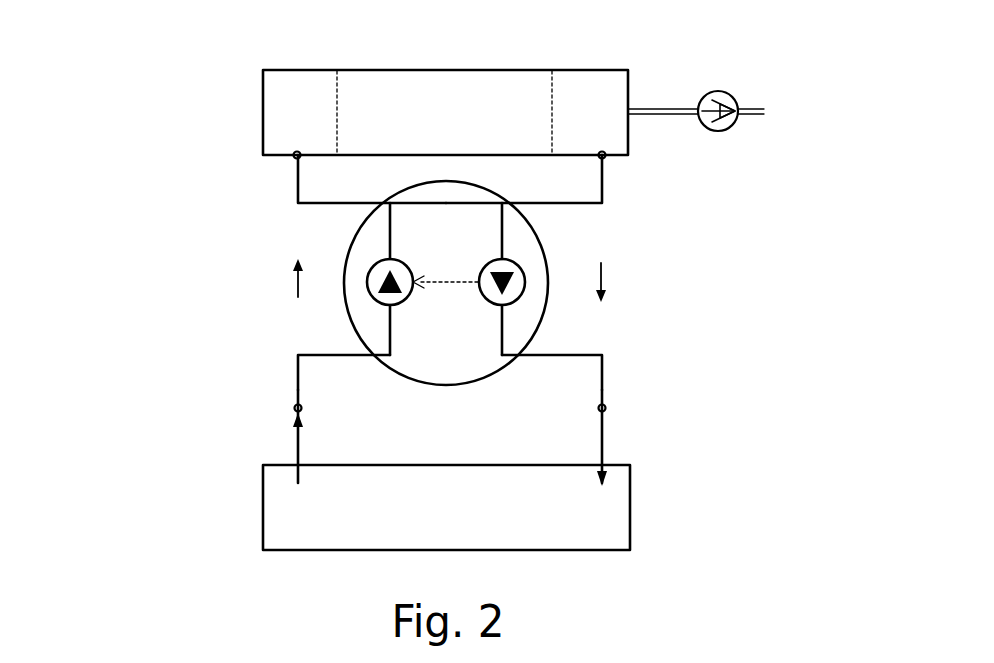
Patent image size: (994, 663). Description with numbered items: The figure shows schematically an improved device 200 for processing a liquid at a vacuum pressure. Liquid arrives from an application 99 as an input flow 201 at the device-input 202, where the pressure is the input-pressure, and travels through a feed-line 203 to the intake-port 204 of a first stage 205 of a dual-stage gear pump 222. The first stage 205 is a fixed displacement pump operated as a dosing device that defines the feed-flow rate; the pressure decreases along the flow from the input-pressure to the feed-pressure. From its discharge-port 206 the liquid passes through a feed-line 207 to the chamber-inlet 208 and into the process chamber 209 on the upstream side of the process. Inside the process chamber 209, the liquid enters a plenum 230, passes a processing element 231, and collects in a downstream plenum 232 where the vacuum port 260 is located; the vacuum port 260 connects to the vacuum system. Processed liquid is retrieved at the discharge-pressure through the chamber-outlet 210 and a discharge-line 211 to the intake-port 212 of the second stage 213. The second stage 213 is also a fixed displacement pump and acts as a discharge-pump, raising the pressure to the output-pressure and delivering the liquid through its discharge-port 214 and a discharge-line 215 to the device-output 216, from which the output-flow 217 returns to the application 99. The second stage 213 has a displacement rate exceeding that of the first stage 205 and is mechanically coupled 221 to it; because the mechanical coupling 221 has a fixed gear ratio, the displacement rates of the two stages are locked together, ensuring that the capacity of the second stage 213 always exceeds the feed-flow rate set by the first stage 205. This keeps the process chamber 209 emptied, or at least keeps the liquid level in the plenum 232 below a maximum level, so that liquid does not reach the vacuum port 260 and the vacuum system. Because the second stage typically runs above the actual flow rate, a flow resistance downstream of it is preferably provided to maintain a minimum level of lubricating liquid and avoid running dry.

The device 200 is at (110, 144).
The application 99 is at (290, 505).
The input flow 201 is at (298, 446).
The device-input 202 is at (294, 408).
The feed-line 203 is at (298, 356).
The intake-port 204 is at (390, 306).
The first stage 205 is at (375, 281).
The discharge-port 206 is at (389, 258).
The feed-line 207 is at (298, 202).
The chamber-inlet 208 is at (296, 156).
The process chamber 209 is at (543, 68).
The chamber-outlet 210 is at (603, 157).
The discharge-line 211 is at (602, 202).
The intake-port 212 is at (503, 258).
The second stage 213 is at (517, 281).
The discharge-port 214 is at (503, 305).
The discharge-line 215 is at (603, 356).
The device-output 216 is at (607, 408).
The output-flow 217 is at (603, 440).
The mechanical coupling 221 is at (443, 276).
The multiple-stage gear pump 222 is at (472, 384).
The plenum 230 is at (296, 85).
The processing element 231 is at (428, 83).
The plenum 232 is at (603, 85).
The vacuum port 260 is at (630, 109).